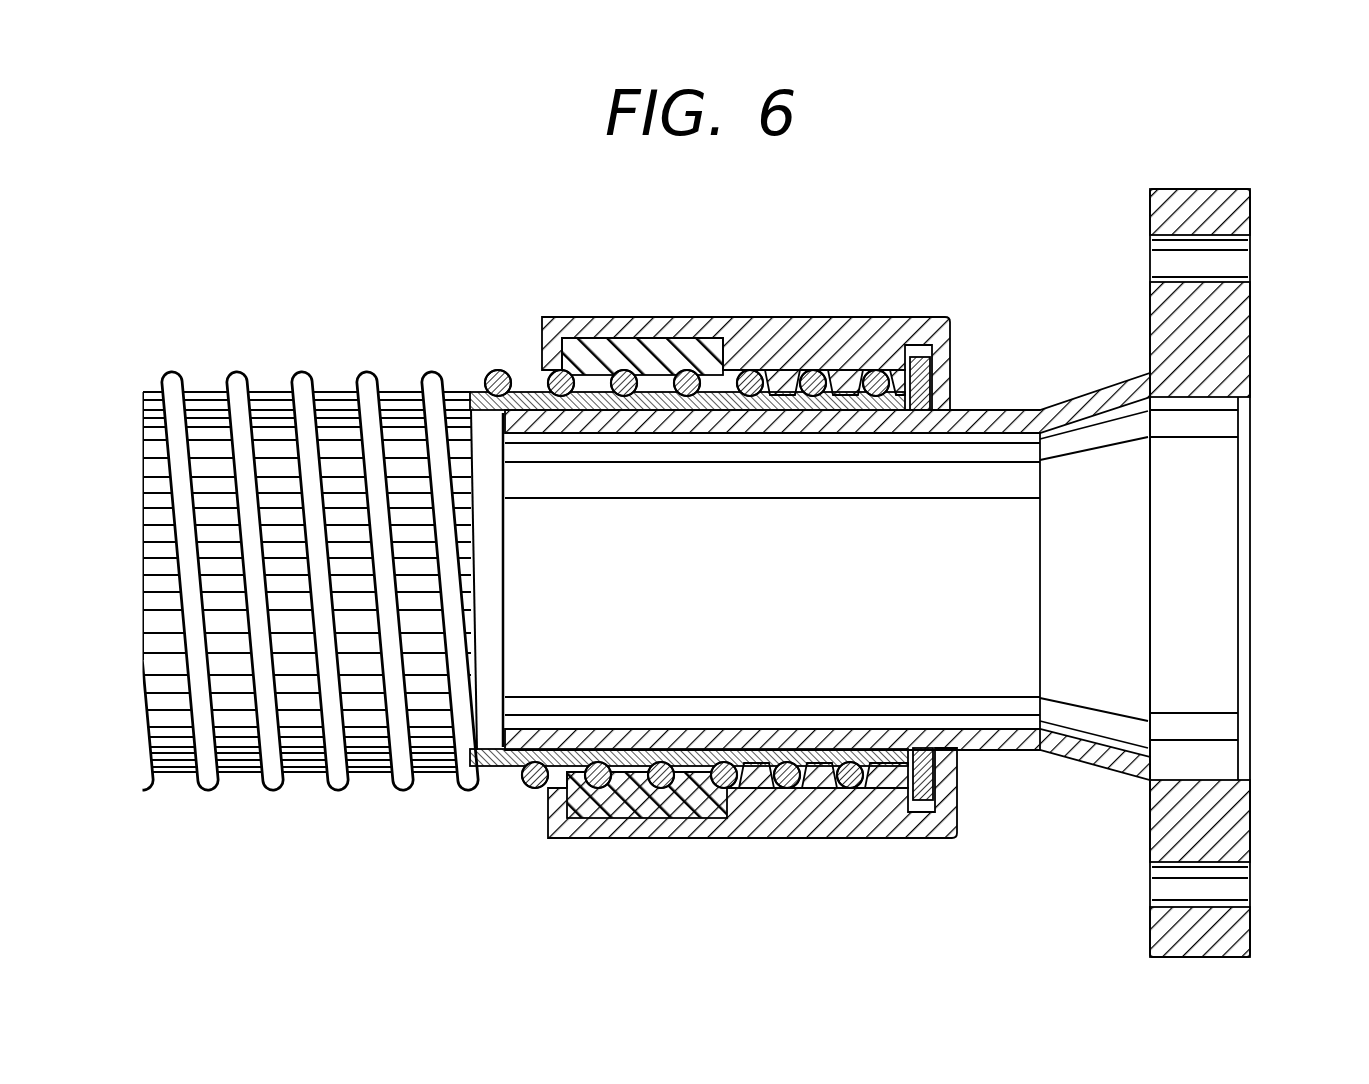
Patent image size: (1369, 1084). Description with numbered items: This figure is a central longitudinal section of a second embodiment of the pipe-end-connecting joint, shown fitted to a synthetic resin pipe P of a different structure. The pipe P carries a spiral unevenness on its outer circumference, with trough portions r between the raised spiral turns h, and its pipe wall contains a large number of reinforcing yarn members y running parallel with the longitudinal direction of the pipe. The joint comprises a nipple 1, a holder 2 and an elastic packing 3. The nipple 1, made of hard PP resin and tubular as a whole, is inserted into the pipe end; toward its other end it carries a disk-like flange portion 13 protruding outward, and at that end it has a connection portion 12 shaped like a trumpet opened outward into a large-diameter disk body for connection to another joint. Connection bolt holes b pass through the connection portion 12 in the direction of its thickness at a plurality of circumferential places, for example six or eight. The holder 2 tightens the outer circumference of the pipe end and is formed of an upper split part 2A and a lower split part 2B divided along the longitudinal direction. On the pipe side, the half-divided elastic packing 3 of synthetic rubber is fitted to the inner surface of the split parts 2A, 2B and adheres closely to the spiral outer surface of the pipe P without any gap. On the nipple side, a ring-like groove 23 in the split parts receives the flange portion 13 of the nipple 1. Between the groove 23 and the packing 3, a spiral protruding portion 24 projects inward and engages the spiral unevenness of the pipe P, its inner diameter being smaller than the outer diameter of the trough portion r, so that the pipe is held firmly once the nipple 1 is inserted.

The synthetic resin pipe P is at (251, 515).
The helical convex rib of hose h is at (240, 384).
The trough portion r is at (333, 390).
The reinforcing yarn members y is at (396, 390).
The nipple 1 is at (904, 573).
The connection portion 12 is at (1220, 460).
The connection bolt holes b is at (1222, 256).
The flange portion 13 is at (950, 337).
The holder 2 is at (775, 566).
The upper split part 2A is at (565, 317).
The lower split part 2B is at (635, 838).
The elastic packing 3 is at (655, 338).
The spiral protruding portion 24 is at (855, 372).
The ring-like groove 23 is at (932, 345).